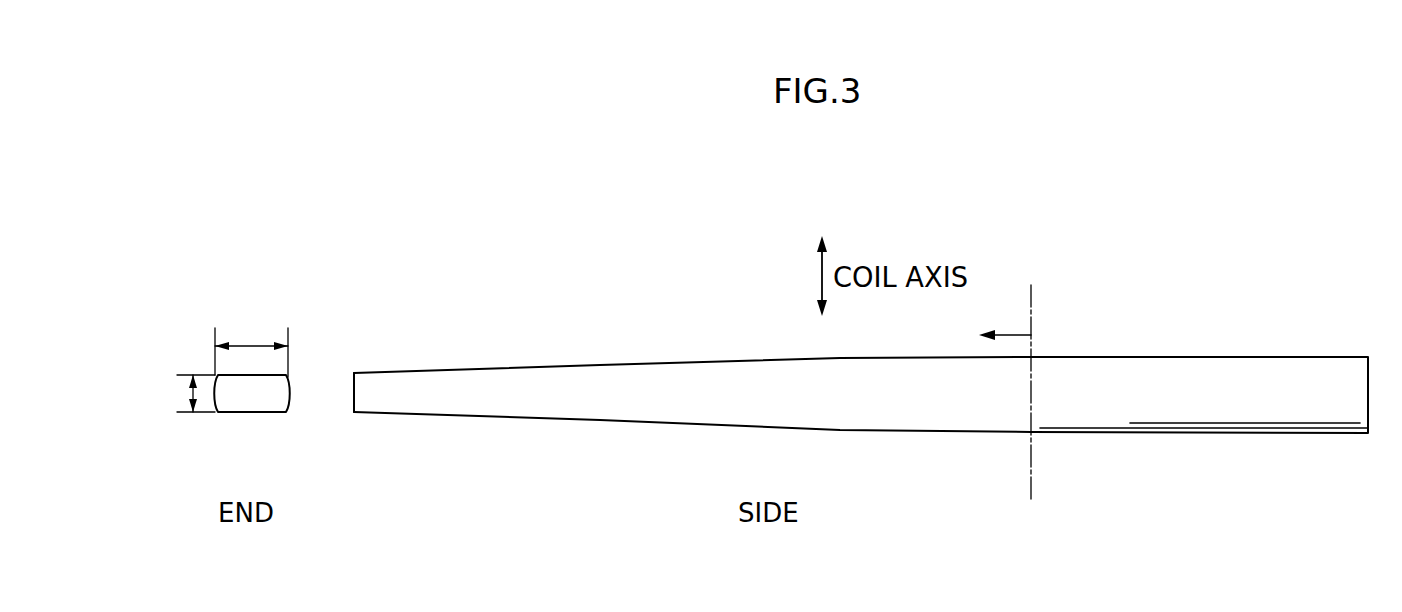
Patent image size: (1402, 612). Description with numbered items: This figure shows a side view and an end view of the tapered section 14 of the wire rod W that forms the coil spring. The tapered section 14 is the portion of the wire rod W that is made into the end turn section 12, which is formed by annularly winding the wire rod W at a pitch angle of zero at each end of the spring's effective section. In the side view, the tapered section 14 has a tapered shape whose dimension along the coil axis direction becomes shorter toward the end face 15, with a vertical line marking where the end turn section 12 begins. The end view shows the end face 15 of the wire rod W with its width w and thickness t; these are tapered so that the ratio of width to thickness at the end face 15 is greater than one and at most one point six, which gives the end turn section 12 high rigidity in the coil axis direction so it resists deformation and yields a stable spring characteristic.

The end turn section 12 is at (1008, 333).
The tapered section 14 is at (570, 397).
The end face 15 is at (282, 390).
The wire rod W is at (1197, 373).